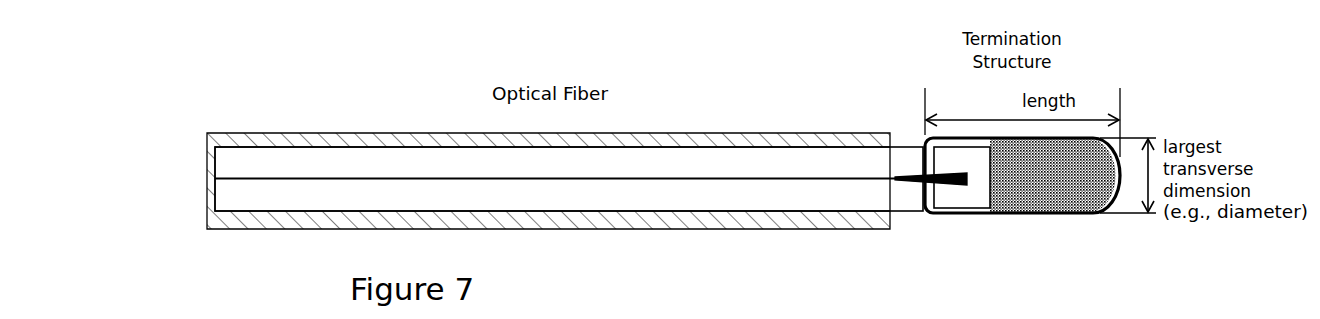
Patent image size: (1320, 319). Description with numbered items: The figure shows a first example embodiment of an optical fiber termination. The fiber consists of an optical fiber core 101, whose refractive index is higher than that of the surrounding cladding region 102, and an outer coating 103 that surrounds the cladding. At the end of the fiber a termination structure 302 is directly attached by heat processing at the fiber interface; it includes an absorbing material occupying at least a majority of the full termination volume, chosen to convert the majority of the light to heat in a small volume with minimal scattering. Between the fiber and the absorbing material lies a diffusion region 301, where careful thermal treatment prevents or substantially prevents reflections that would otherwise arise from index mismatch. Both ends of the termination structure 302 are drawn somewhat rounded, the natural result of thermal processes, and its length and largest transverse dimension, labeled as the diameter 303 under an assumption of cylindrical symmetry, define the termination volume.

The optical fiber core 101 is at (625, 181).
The cladding region 102 is at (253, 197).
The coating 103 is at (285, 135).
The diffusion region 301 is at (952, 193).
The termination structure 302 is at (1062, 199).
The termination structure outer surface 303 is at (1115, 203).